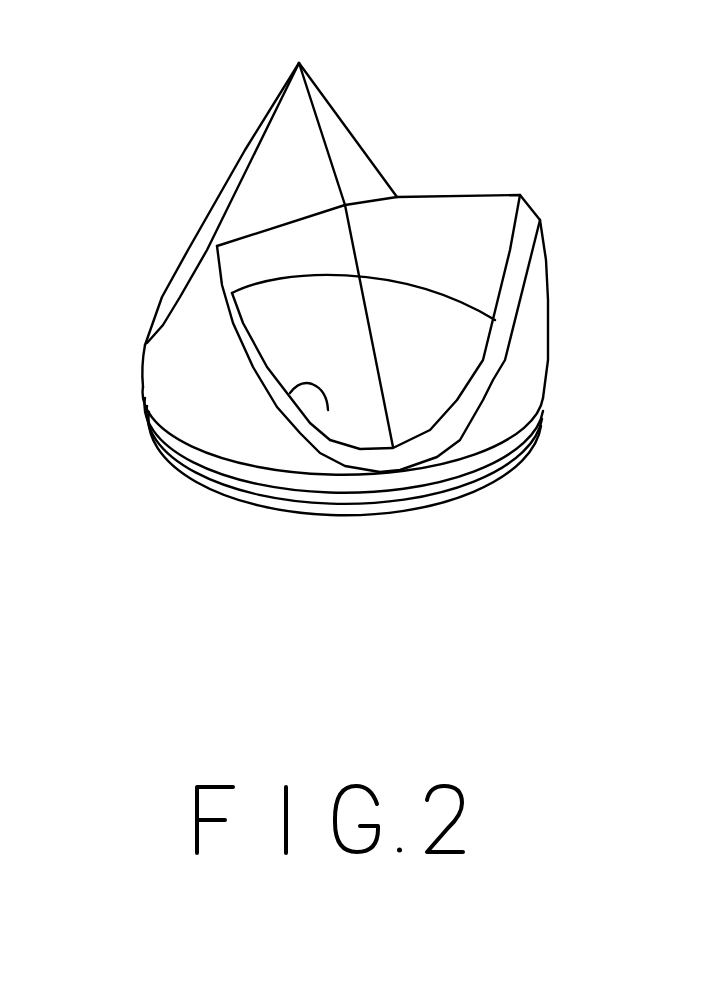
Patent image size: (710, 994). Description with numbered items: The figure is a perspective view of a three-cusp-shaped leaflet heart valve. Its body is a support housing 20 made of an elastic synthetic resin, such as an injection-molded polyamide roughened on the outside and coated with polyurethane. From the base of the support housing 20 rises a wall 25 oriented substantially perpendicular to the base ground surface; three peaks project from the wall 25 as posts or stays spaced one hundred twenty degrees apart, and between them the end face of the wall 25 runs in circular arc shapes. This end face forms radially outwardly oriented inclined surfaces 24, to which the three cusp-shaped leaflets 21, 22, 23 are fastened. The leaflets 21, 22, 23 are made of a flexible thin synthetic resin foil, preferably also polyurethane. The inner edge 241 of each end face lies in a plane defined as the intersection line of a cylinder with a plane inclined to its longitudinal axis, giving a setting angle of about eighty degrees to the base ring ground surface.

The support housing 20 is at (535, 445).
The cusp-shaped leaflet 21 is at (452, 265).
The cusp-shaped leaflet 22 is at (283, 182).
The cusp-shaped leaflet 23 is at (357, 183).
The inclined surface of the end face of the wall 24 is at (497, 353).
The wall 25 is at (228, 385).
The inner edge of the end face 241 is at (328, 410).